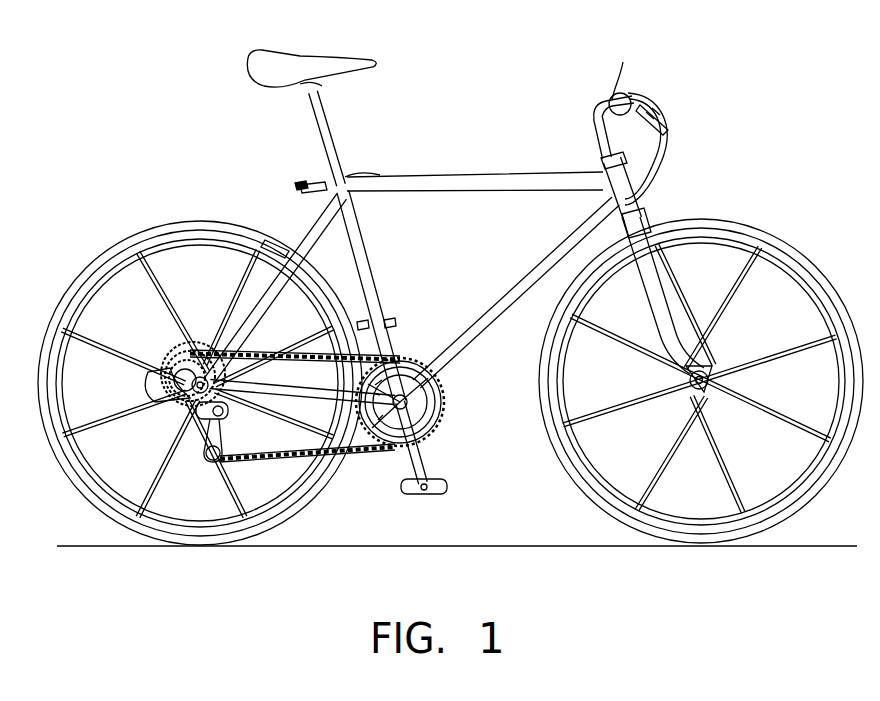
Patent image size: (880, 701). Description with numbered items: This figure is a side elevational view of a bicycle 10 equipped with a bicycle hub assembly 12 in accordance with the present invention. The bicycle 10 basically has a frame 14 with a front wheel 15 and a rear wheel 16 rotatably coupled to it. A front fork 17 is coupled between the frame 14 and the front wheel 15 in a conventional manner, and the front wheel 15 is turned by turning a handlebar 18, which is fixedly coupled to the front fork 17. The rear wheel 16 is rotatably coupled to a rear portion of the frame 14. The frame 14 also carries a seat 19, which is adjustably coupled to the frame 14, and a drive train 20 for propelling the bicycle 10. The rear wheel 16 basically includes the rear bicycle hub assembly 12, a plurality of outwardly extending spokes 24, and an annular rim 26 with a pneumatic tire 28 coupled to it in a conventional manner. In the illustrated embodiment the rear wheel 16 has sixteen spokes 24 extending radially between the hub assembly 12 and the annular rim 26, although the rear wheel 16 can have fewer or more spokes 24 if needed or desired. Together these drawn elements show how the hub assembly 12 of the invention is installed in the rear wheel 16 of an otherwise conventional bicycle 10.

The bicycle 10 is at (717, 112).
The bicycle hub assembly 12 is at (167, 351).
The frame 14 is at (461, 170).
The front wheel 15 is at (745, 222).
The rear wheel 16 is at (189, 216).
The front fork 17 is at (681, 251).
The handlebar 18 is at (613, 95).
The seat 19 is at (342, 55).
The drive train 20 is at (363, 454).
The spokes 24 is at (150, 402).
The annular rim 26 is at (98, 284).
The pneumatic tire 28 is at (72, 285).